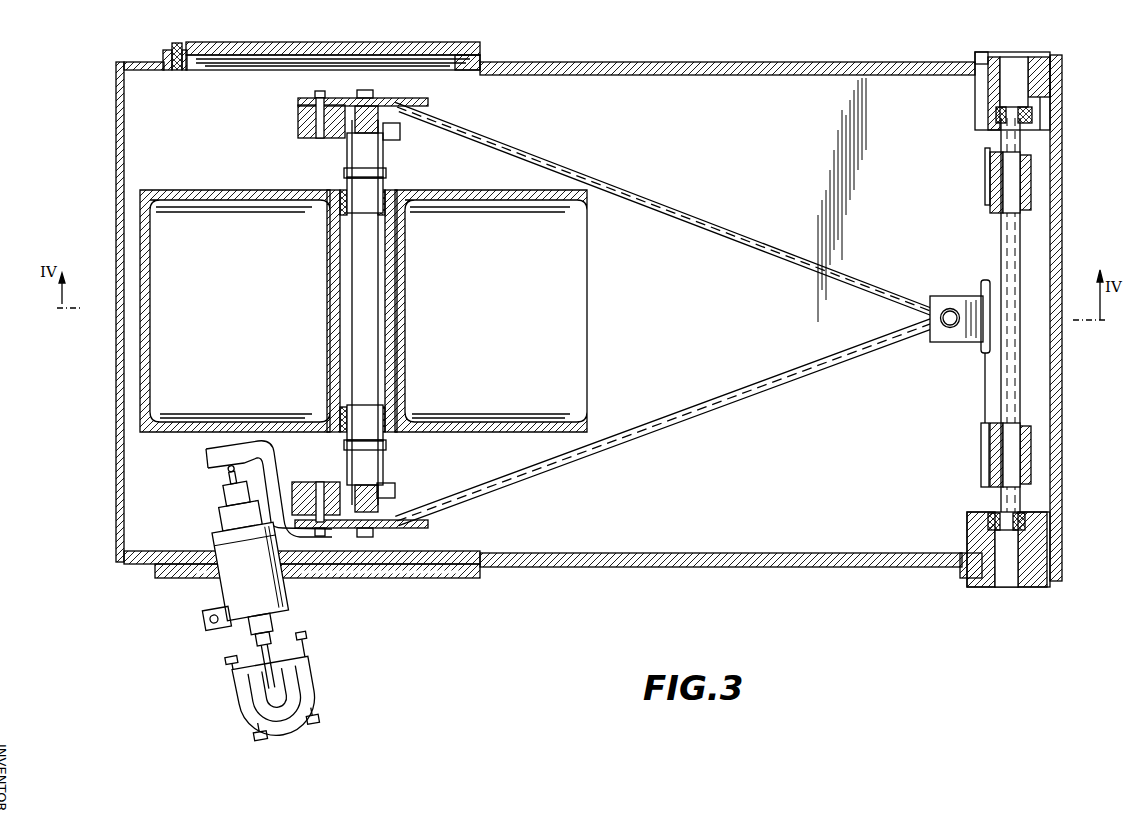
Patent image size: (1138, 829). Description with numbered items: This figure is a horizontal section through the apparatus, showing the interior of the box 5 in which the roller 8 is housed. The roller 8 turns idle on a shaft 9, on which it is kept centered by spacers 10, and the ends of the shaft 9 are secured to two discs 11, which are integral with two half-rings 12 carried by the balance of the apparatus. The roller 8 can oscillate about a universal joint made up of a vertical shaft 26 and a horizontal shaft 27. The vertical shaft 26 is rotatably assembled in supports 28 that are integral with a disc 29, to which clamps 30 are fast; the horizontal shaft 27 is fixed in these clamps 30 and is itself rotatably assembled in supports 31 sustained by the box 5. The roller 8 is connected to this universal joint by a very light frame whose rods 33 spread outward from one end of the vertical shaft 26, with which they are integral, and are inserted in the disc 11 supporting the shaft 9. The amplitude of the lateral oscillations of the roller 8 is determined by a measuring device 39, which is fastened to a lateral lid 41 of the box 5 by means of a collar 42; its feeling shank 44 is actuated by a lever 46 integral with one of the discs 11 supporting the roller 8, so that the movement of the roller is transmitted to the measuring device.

The box 5 is at (828, 62).
The roller 8 is at (140, 381).
The shaft 9 is at (355, 264).
The spacers 10 is at (347, 156).
The discs 11 is at (410, 100).
The half-rings 12 is at (296, 116).
The vertical shaft 26 is at (938, 342).
The horizontal shaft 27 is at (1022, 362).
The supports 28 is at (946, 296).
The disc 29 is at (968, 383).
The clamps 30 is at (1031, 170).
The supports 31 is at (1040, 100).
The rods 33 is at (590, 166).
The measuring device 39 is at (246, 628).
The lateral lid 41 is at (390, 578).
The collar 42 is at (197, 613).
The feeling shank 44 is at (226, 478).
The lever 46 is at (206, 456).